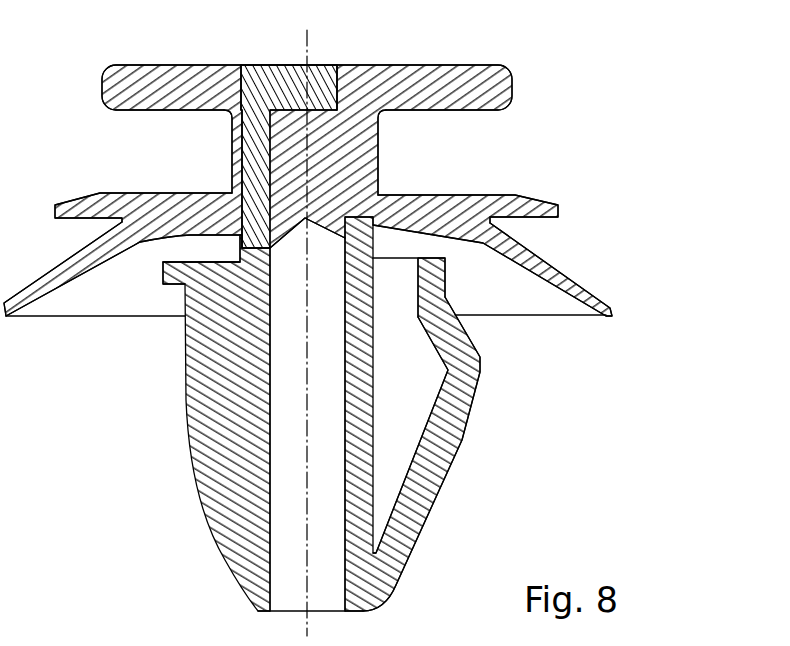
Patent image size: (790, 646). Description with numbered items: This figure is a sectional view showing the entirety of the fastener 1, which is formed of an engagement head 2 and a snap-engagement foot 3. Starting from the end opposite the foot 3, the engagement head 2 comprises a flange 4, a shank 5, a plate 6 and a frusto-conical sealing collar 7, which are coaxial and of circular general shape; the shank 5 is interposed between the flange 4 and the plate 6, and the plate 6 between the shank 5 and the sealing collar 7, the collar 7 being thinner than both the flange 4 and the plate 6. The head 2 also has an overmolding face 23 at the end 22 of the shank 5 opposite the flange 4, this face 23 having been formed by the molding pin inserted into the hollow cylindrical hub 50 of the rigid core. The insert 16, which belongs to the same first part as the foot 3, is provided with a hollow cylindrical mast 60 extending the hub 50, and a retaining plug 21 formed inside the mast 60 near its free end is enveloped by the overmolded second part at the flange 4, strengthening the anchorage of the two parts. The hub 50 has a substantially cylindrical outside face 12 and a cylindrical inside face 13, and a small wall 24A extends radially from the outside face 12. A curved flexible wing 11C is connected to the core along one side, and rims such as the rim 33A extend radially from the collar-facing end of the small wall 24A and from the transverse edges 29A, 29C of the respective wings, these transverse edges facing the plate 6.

The fastener 1 is at (677, 113).
The engagement head 2 is at (528, 62).
The snap-engagement foot 3 is at (592, 432).
The flange 4 is at (438, 78).
The shank 5 is at (378, 150).
The plate 6 is at (548, 204).
The sealing collar 7 is at (583, 294).
The insert 16 is at (273, 75).
The retaining plug 21 is at (322, 76).
The hollow cylindrical mast 60 is at (253, 118).
The overmolding face 23 is at (335, 233).
The end of the shank 22 is at (289, 244).
The small wall 24A is at (233, 485).
The rim 33A is at (163, 269).
The transverse edge 29A is at (195, 262).
The hollow cylindrical hub 50 is at (277, 557).
The outside face 12 is at (373, 362).
The inside face 13 is at (345, 428).
The curved flexible wing 11C is at (426, 430).
The transverse edge 29C is at (396, 255).